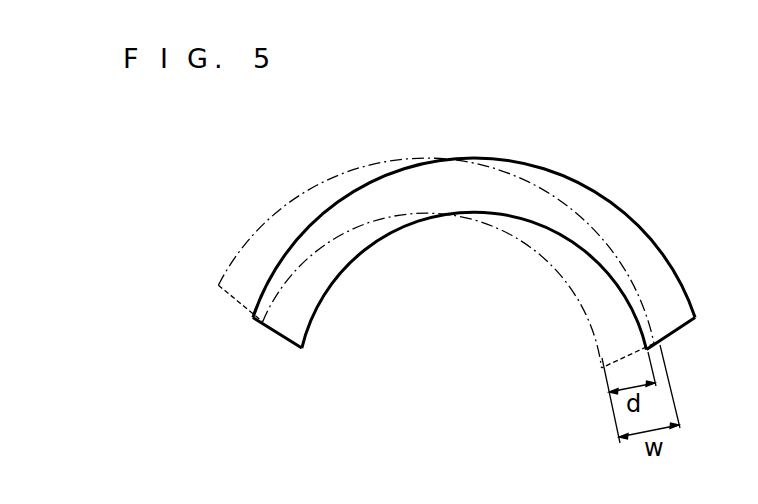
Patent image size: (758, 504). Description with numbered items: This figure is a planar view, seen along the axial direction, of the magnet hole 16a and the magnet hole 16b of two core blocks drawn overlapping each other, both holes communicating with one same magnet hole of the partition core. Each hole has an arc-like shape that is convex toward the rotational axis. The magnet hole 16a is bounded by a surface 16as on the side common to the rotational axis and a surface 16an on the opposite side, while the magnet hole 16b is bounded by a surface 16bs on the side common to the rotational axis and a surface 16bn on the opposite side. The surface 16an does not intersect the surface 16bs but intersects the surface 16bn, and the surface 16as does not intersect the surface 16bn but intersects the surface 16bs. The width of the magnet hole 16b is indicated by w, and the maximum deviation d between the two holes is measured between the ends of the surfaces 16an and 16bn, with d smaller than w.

The magnet hole 16a is at (490, 243).
The surface 16as is at (592, 196).
The surface 16an is at (298, 320).
The magnet hole 16b is at (384, 241).
The surface 16bs is at (312, 197).
The surface 16bn is at (558, 275).